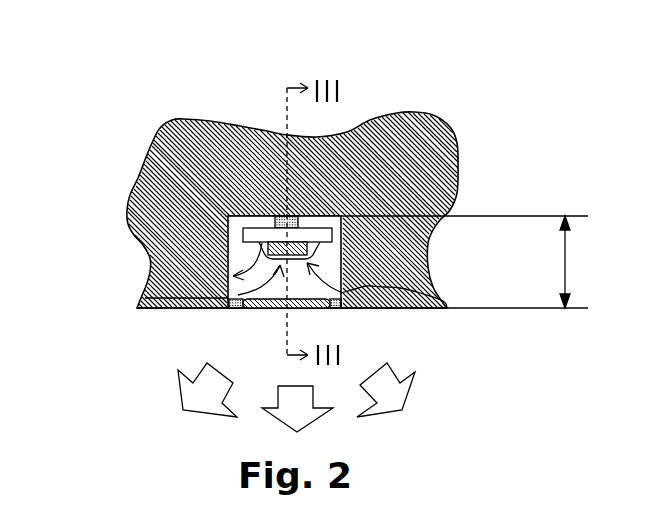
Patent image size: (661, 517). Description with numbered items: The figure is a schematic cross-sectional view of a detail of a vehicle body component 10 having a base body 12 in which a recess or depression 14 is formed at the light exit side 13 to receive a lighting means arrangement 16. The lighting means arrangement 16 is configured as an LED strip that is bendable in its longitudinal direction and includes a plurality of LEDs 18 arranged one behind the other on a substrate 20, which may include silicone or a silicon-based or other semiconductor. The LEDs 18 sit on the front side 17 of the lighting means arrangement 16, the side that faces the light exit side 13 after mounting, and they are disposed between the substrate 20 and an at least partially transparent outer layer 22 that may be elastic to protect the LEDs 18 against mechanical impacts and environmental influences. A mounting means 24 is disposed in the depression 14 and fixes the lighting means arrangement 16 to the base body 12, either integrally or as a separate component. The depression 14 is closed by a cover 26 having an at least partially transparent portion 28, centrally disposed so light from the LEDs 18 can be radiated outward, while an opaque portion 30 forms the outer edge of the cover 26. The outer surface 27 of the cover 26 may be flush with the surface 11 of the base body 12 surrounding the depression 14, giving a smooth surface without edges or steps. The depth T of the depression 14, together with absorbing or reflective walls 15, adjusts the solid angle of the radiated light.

The vehicle body component 10 is at (490, 138).
The surface of the base body 11 is at (390, 311).
The base body 12 is at (158, 235).
The light exit side 13 is at (163, 376).
The depression 14 is at (228, 282).
The walls of the depression 15 is at (228, 233).
The lighting means arrangement 16 is at (441, 299).
The front side 17 is at (145, 298).
The LEDs 18 is at (285, 242).
The substrate 20 is at (327, 237).
The outer layer 22 is at (262, 242).
The mounting means 24 is at (287, 220).
The cover 26 is at (270, 317).
The outer surface of the cover 27 is at (331, 310).
The at least partially transparent portion 28 is at (257, 311).
The opaque portion 30 is at (228, 311).
The depth of the depression T is at (565, 280).